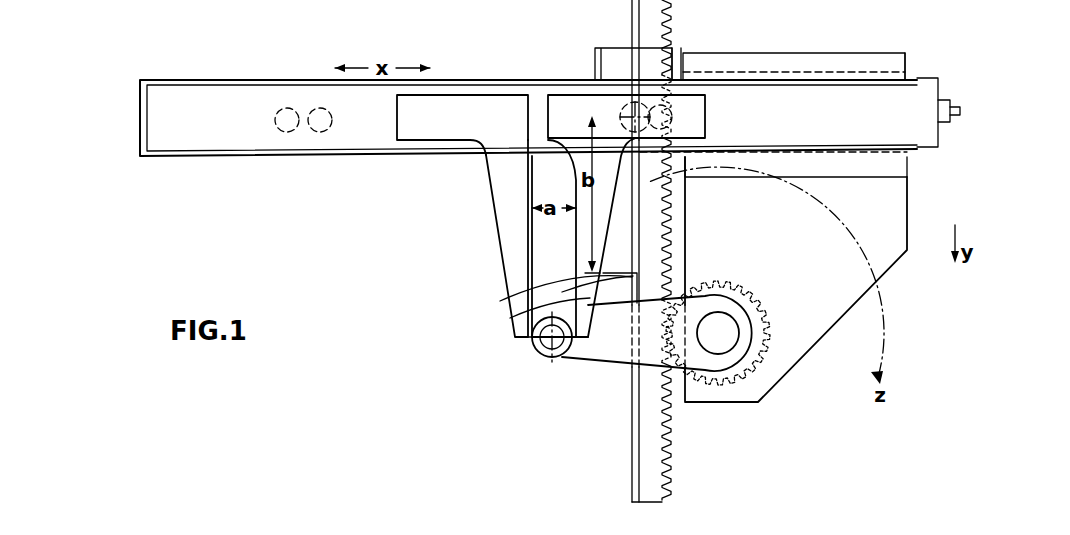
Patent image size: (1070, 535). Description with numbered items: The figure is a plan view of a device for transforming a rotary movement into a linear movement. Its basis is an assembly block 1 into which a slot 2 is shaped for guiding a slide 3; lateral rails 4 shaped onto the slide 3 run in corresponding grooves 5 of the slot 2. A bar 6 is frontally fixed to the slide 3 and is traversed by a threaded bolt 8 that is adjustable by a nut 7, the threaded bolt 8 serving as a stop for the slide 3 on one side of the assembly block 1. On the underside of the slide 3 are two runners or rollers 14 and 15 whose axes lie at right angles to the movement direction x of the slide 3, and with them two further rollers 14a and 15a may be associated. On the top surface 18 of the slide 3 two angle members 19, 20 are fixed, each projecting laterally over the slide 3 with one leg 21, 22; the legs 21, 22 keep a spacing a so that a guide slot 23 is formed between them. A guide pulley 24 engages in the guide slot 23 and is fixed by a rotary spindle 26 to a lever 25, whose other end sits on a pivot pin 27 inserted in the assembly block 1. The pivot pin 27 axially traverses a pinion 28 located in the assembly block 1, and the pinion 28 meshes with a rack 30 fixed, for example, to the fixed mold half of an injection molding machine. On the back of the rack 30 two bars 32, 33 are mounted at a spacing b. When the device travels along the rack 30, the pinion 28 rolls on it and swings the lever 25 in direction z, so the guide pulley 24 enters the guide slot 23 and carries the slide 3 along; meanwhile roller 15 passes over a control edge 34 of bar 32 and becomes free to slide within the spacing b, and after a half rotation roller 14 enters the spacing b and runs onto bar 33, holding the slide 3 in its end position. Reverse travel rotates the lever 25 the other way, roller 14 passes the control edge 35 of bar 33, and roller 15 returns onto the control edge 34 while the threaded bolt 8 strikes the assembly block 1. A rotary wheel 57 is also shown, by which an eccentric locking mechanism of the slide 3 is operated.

The assembly block 1 is at (812, 320).
The slot 2 is at (907, 72).
The slide 3 is at (847, 110).
The lateral rails 4 is at (185, 78).
The grooves 5 is at (918, 72).
The bar 6 is at (927, 92).
The nut 7 is at (948, 122).
The threaded bolt 8 is at (960, 113).
The roller 14 is at (312, 130).
The further roller 14a is at (287, 108).
The roller 15 is at (632, 117).
The further roller 15a is at (628, 108).
The top surface 18 is at (188, 140).
The angle member 19 is at (495, 236).
The angle member 20 is at (706, 117).
The leg 21 is at (410, 118).
The leg 22 is at (540, 318).
The guide slot 23 is at (543, 263).
The guide pulley 24 is at (546, 350).
The lever 25 is at (580, 347).
The rotary spindle 26 is at (545, 340).
The pivot pin 27 is at (726, 345).
The pinion 28 is at (768, 372).
The rack 30 is at (655, 397).
The bar 32 is at (632, 30).
The bar 33 is at (633, 395).
The control edge 34 is at (680, 78).
The control edge 35 is at (586, 300).
The rotary wheel 57 is at (677, 78).